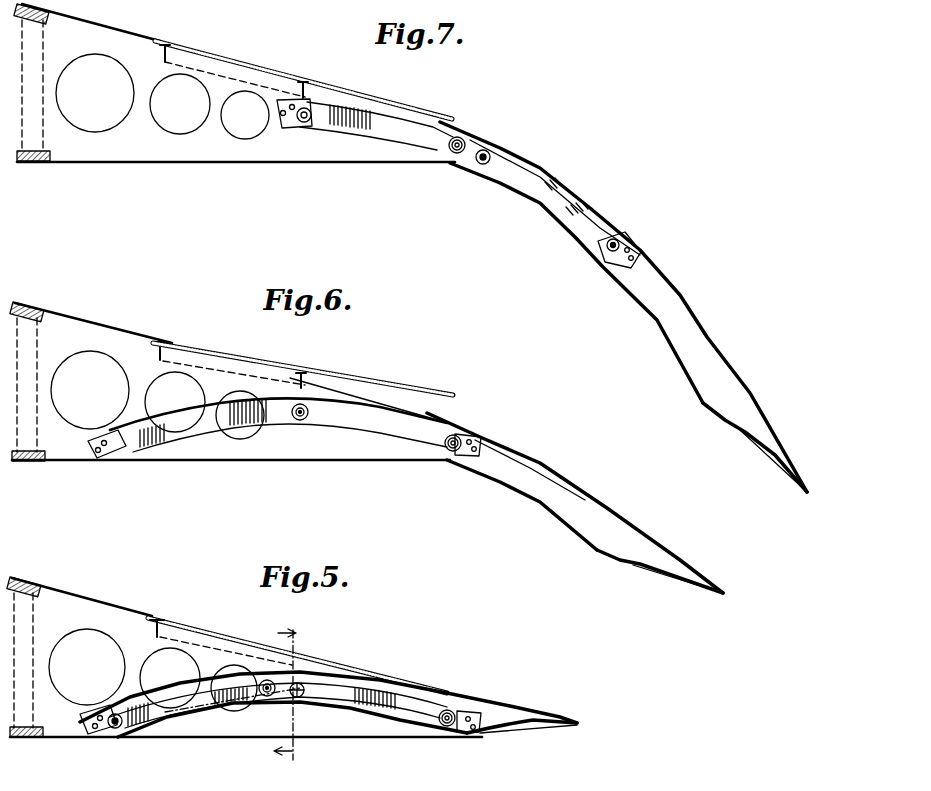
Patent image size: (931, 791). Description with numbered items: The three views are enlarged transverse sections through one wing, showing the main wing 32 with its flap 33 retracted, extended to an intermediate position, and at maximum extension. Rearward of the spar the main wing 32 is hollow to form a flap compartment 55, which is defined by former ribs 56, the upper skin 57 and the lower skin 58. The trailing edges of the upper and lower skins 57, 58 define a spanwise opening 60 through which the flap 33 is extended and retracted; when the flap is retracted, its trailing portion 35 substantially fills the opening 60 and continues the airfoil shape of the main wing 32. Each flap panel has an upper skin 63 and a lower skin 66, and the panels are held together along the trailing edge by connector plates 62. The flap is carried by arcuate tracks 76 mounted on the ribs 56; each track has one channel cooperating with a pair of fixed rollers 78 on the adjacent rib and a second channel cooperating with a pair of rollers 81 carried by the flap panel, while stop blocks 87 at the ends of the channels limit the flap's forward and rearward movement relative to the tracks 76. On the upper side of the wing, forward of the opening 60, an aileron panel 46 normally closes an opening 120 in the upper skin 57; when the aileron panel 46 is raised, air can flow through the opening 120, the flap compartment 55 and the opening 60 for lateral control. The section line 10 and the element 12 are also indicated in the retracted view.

In FIG. 5, the section line 10- 10 is at (288, 693).
In FIG. 5, the fastening 12 is at (90, 728).
In FIG. 7, the main wing 32 is at (234, 166).
In FIG. 6, the main wing 32 is at (365, 464).
In FIG. 5, the main wing 32 is at (320, 741).
In FIG. 7, the flap 33 is at (623, 307).
In FIG. 6, the flap 33 is at (587, 519).
In FIG. 5, the flap 33 is at (337, 706).
In FIG. 7, the trailing portion of the flap 35 is at (755, 400).
In FIG. 6, the trailing portion of the flap 35 is at (695, 565).
In FIG. 5, the trailing portion of the flap 35 is at (538, 712).
In FIG. 7, the aileron panel 46 is at (240, 60).
In FIG. 6, the aileron panel 46 is at (390, 382).
In FIG. 5, the aileron panel 46 is at (378, 673).
In FIG. 7, the flap compartment 55 is at (123, 145).
In FIG. 6, the flap compartment 55 is at (45, 350).
In FIG. 5, the flap compartment 55 is at (42, 623).
In FIG. 7, the former rib 56 is at (173, 153).
In FIG. 6, the former rib 56 is at (277, 448).
In FIG. 5, the former rib 56 is at (245, 722).
In FIG. 7, the upper skin 57 is at (98, 25).
In FIG. 6, the upper skin 57 is at (83, 317).
In FIG. 5, the upper skin 57 is at (125, 605).
In FIG. 7, the lower skin 58 is at (80, 165).
In FIG. 6, the lower skin 58 is at (62, 462).
In FIG. 5, the lower skin 58 is at (190, 740).
In FIG. 7, the opening 60 is at (456, 162).
In FIG. 6, the opening 60 is at (448, 465).
In FIG. 5, the opening 60 is at (440, 742).
In FIG. 7, the connector plate 62 is at (725, 425).
In FIG. 6, the connector plate 62 is at (680, 577).
In FIG. 5, the connector plate 62 is at (545, 728).
In FIG. 7, the upper skin of flap panel 63 is at (575, 190).
In FIG. 6, the upper skin of flap panel 63 is at (612, 510).
In FIG. 5, the upper skin of flap panel 63 is at (483, 700).
In FIG. 7, the lower skin of flap panel 66 is at (672, 345).
In FIG. 6, the lower skin of flap panel 66 is at (575, 527).
In FIG. 5, the lower skin of flap panel 66 is at (388, 721).
In FIG. 7, the arcuate track 76 is at (385, 132).
In FIG. 6, the arcuate track 76 is at (172, 438).
In FIG. 5, the arcuate track 76 is at (160, 720).
In FIG. 7, the fixed roller 78 is at (318, 108).
In FIG. 5, the fixed roller 78 is at (326, 672).
In FIG. 7, the flap roller 81 is at (510, 152).
In FIG. 6, the flap roller 81 is at (303, 405).
In FIG. 5, the flap roller 81 is at (265, 680).
In FIG. 7, the stop block 87 is at (290, 128).
In FIG. 6, the stop block 87 is at (107, 453).
In FIG. 5, the stop block 87 is at (100, 735).
In FIG. 6, the opening in the upper skin 120 is at (178, 342).